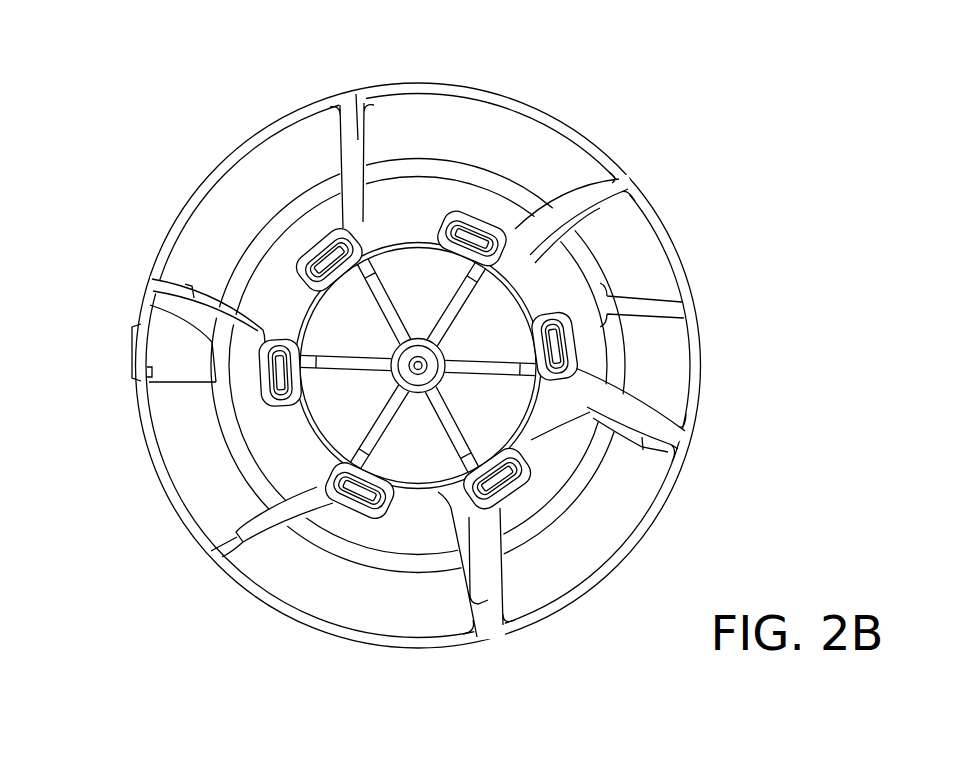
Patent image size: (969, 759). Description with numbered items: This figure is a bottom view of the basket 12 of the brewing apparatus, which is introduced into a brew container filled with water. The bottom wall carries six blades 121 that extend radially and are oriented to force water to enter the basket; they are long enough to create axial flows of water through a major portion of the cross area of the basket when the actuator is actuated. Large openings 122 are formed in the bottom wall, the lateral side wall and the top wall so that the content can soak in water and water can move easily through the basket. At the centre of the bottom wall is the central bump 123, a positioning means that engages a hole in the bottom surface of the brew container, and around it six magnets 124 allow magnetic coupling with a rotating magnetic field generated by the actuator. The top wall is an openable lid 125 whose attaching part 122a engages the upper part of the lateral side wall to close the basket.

The basket 12 is at (782, 268).
The blades 121 is at (357, 110).
The openings 122 is at (500, 130).
The attaching part 122a is at (132, 355).
The central bump 123 is at (425, 353).
The magnets 124 is at (490, 250).
The openable lid 125 is at (250, 262).